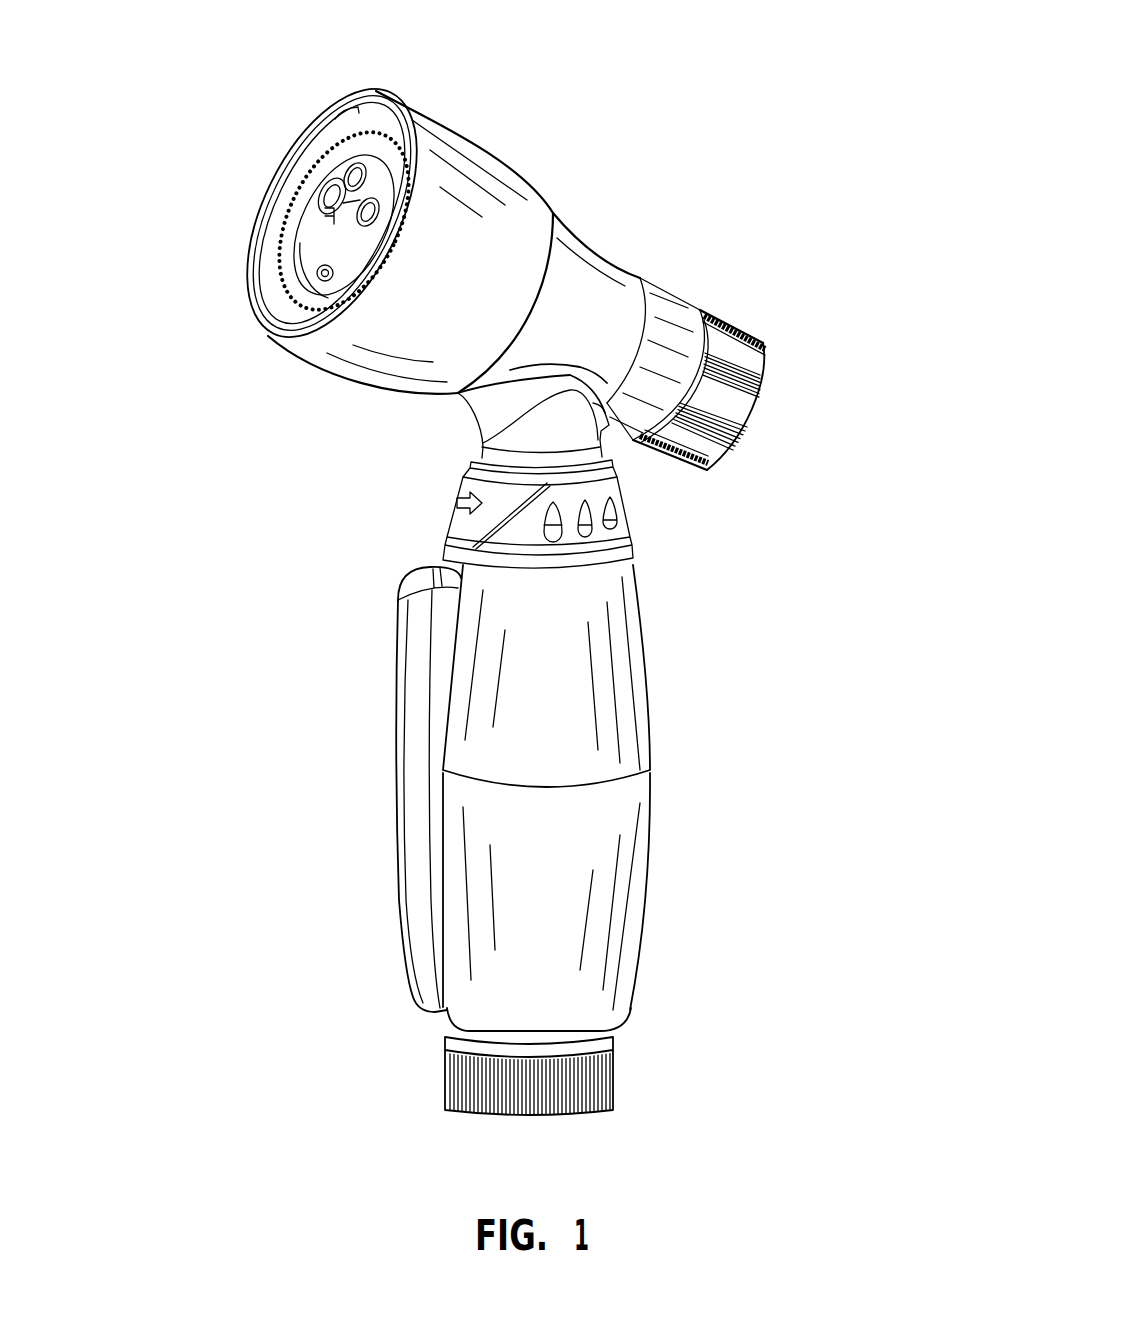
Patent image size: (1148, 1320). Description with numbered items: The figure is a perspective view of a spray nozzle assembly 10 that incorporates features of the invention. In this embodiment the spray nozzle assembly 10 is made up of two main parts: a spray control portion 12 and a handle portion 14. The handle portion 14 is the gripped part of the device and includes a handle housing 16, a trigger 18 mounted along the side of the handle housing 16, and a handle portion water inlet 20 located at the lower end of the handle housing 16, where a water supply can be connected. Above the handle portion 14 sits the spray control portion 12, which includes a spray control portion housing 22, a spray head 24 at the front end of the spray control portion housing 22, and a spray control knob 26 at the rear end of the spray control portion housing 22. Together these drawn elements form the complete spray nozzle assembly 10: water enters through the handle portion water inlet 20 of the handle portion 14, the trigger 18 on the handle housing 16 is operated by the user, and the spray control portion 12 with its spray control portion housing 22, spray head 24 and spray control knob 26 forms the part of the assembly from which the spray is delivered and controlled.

The spray nozzle assembly 10 is at (698, 128).
The spray control portion 12 is at (333, 405).
The handle portion 14 is at (265, 765).
The handle housing 16 is at (650, 720).
The trigger 18 is at (397, 640).
The handle portion water inlet 20 is at (613, 1073).
The spray control portion housing 22 is at (503, 157).
The spray head 24 is at (332, 120).
The spray control knob 26 is at (732, 320).